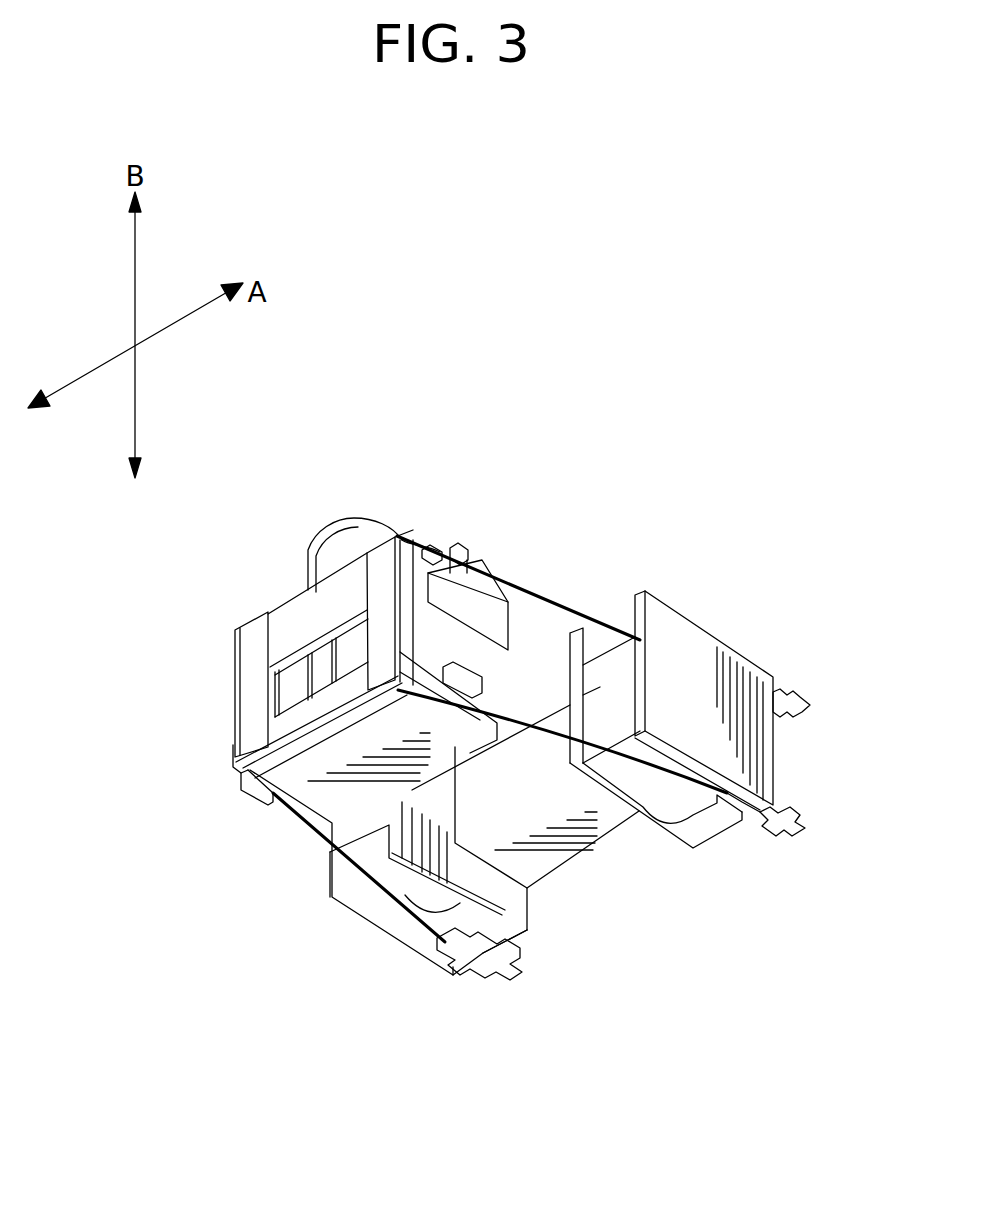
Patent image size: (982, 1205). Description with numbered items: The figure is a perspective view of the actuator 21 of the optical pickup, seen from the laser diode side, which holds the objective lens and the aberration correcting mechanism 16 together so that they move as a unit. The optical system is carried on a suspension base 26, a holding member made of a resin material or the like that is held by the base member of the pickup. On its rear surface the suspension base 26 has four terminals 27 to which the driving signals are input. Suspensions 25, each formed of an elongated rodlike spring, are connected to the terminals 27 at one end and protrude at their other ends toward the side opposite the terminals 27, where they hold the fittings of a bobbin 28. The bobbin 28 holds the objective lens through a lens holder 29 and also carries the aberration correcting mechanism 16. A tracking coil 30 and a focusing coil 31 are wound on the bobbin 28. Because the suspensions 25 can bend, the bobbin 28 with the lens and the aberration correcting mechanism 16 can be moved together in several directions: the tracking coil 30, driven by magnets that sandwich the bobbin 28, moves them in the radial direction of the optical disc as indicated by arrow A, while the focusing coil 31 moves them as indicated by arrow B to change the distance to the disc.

The aberration correcting mechanism 16 is at (311, 787).
The actuator 21 is at (556, 368).
The suspensions 25 is at (552, 600).
The suspension base 26 is at (680, 668).
The terminals 27 is at (795, 715).
The bobbin 28 is at (300, 630).
The lens holder 29 is at (345, 555).
The tracking coil 30 is at (385, 565).
The focusing coil 31 is at (298, 685).